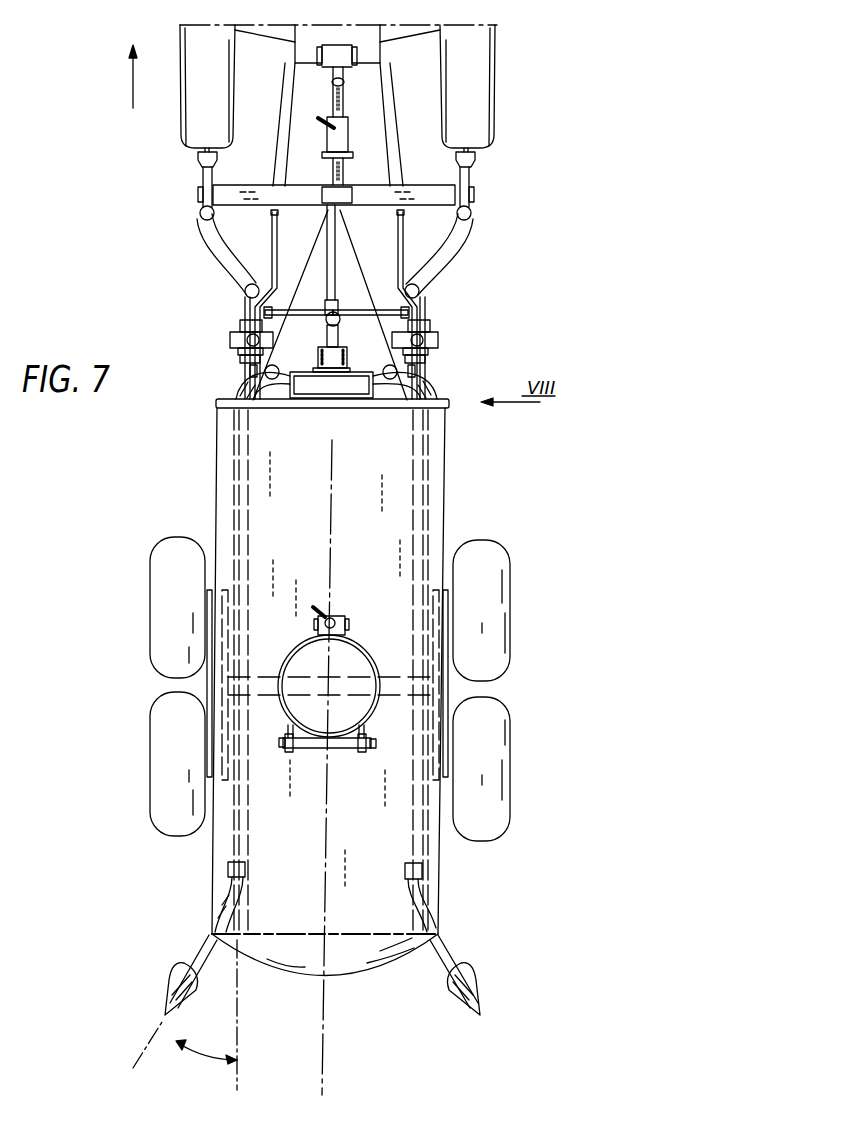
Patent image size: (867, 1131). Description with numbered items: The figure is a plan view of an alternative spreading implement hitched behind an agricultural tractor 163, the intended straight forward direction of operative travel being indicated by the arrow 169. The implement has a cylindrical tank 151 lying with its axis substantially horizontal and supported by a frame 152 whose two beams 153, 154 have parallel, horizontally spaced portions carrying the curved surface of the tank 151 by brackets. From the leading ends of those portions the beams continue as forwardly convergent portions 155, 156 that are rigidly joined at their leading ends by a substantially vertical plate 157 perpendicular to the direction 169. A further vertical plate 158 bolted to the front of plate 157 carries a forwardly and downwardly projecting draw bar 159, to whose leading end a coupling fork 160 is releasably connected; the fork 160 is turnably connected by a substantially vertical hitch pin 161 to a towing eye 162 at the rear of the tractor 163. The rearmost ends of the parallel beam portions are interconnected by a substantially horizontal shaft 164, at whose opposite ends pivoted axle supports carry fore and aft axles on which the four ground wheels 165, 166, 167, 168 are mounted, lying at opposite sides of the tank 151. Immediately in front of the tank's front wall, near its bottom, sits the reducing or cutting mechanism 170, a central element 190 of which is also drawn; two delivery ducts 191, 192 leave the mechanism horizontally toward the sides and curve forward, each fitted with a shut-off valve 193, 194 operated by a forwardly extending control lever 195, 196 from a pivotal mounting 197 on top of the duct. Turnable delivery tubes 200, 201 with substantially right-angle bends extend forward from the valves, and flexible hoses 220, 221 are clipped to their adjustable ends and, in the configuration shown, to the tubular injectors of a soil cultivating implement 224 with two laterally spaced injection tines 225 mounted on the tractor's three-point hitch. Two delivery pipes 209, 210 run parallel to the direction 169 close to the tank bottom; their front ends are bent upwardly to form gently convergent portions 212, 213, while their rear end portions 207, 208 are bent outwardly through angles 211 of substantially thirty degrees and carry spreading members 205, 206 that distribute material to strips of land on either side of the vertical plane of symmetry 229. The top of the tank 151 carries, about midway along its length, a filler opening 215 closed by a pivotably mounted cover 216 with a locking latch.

The tank 151 is at (216, 481).
The frame 152 is at (439, 389).
The beam 153 is at (233, 450).
The beam 154 is at (431, 487).
The forwardly convergent portion 155 is at (292, 326).
The forwardly convergent portion 156 is at (381, 334).
The vertical plate 157 is at (281, 310).
The further vertical plate 158 is at (363, 310).
The draw bar 159 is at (357, 259).
The coupling fork 160 is at (349, 147).
The hitch pin 161 is at (324, 124).
The towing eye 162 is at (349, 92).
The agricultural tractor 163 is at (258, 42).
The horizontal shaft 164 is at (263, 679).
The ground wheel 165 is at (150, 767).
The ground wheel 166 is at (150, 637).
The ground wheel 167 is at (510, 786).
The ground wheel 168 is at (510, 597).
The direction of operative travel 169 is at (132, 101).
The reducing or cutting mechanism 170 is at (342, 403).
The central shaft 190 is at (328, 219).
The delivery duct 191 is at (389, 387).
The delivery duct 192 is at (279, 385).
The shut-off valve 193 is at (439, 336).
The shut-off valve 194 is at (229, 335).
The control lever 195 is at (403, 226).
The control lever 196 is at (272, 232).
The pivotal mounting 197 is at (242, 364).
The delivery tube 200 is at (421, 292).
The delivery tube 201 is at (243, 293).
The spreading member 205 is at (481, 1011).
The spreading member 206 is at (164, 1004).
The rear end portion 207 is at (450, 952).
The rear end portion 208 is at (203, 942).
The delivery pipe 209 is at (405, 893).
The delivery pipe 210 is at (240, 852).
The angle 211 is at (186, 1046).
The upwardly bent-over portion 212 is at (369, 408).
The upwardly bent-over portion 213 is at (243, 386).
The filler opening 215 is at (357, 652).
The cover 216 is at (370, 717).
The flexible delivery hose 220 is at (448, 243).
The flexible delivery hose 221 is at (217, 241).
The soil cultivating implement 224 is at (266, 185).
The injection tine 225 is at (197, 162).
The vertical plane of symmetry 229 is at (324, 1023).